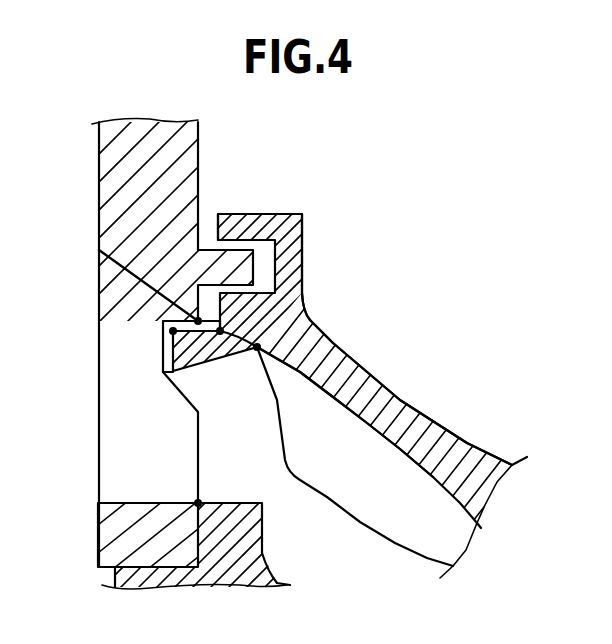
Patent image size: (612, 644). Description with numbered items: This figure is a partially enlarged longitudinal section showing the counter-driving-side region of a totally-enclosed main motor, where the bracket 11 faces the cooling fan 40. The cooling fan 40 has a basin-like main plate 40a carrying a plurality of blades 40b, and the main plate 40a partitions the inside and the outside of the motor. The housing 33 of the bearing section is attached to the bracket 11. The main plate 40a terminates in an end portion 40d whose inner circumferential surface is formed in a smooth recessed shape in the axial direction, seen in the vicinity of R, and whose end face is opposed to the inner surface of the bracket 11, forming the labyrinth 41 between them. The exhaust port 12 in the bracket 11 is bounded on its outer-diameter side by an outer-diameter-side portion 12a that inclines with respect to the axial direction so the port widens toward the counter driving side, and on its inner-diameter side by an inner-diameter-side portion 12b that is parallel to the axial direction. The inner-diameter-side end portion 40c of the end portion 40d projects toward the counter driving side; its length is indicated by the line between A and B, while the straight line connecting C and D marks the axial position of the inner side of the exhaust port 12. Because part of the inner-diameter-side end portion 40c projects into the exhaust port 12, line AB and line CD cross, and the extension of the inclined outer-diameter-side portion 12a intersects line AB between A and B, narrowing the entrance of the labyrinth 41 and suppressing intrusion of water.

The bracket 11 is at (115, 178).
The exhaust port 12 is at (145, 282).
The outer-diameter-side portion 12a is at (122, 268).
The inner-diameter-side portion 12b is at (148, 503).
The housing 33 is at (113, 577).
The cooling fan 40 is at (417, 413).
The main plate 40a is at (370, 375).
The blades 40b is at (397, 528).
The inner-diameter-side end portion 40c is at (185, 347).
The end portion 40d is at (290, 283).
The labyrinth 41 is at (203, 218).
The point A is at (163, 331).
The point B is at (220, 333).
The point C is at (198, 318).
The point D is at (200, 502).
The vicinity of R is at (257, 349).